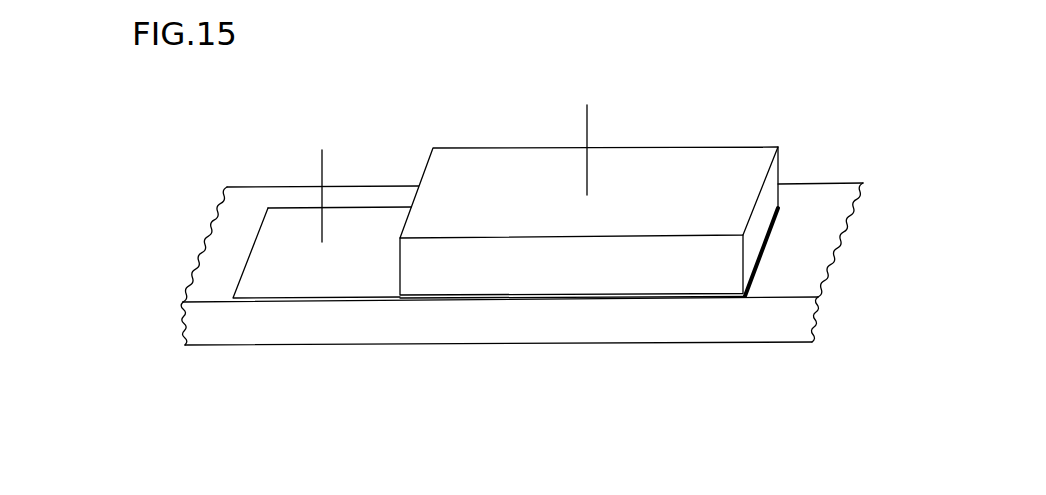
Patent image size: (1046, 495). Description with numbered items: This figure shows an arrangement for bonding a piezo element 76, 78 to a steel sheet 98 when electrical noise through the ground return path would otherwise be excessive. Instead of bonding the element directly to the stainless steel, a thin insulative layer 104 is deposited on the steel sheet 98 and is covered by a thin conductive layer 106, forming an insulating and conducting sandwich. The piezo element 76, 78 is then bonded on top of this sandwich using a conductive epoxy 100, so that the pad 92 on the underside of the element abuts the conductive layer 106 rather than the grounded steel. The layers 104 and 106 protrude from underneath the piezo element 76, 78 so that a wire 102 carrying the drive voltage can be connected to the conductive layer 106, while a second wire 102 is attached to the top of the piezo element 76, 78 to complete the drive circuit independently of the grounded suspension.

The piezo element 76 is at (470, 227).
The piezo element 78 is at (712, 84).
The pad 92 is at (589, 221).
The steel sheet 98 is at (499, 321).
The conductive epoxy 100 is at (440, 304).
The wire 102 is at (453, 130).
The insulative layer 104 is at (470, 240).
The conductive layer 106 is at (280, 189).